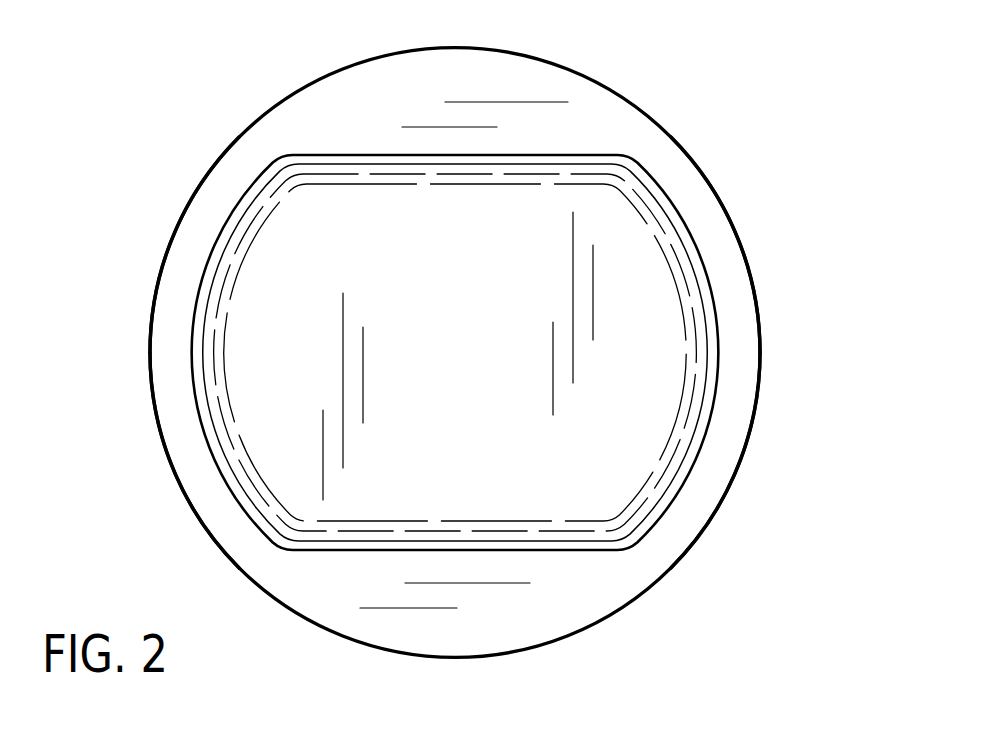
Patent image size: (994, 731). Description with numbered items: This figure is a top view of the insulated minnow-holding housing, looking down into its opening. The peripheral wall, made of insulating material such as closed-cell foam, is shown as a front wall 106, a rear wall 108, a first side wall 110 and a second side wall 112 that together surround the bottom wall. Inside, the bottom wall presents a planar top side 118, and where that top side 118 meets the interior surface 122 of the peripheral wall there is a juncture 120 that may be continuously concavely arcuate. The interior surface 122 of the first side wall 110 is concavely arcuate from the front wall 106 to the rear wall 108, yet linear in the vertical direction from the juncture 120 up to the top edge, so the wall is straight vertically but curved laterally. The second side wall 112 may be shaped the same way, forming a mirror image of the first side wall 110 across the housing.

The front wall 106 is at (540, 58).
The rear wall 108 is at (490, 653).
The first side wall 110 is at (760, 348).
The second side wall 112 is at (150, 352).
The top side 118 is at (533, 262).
The juncture 120 is at (284, 188).
The interior surface 122 is at (382, 155).